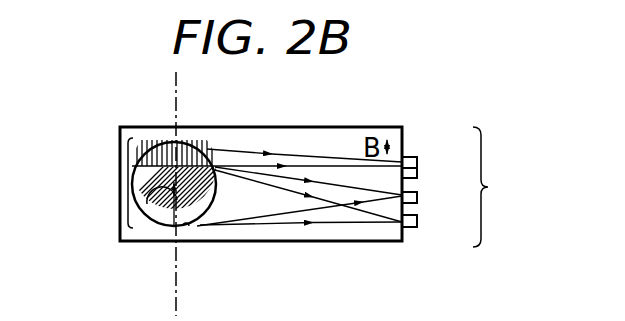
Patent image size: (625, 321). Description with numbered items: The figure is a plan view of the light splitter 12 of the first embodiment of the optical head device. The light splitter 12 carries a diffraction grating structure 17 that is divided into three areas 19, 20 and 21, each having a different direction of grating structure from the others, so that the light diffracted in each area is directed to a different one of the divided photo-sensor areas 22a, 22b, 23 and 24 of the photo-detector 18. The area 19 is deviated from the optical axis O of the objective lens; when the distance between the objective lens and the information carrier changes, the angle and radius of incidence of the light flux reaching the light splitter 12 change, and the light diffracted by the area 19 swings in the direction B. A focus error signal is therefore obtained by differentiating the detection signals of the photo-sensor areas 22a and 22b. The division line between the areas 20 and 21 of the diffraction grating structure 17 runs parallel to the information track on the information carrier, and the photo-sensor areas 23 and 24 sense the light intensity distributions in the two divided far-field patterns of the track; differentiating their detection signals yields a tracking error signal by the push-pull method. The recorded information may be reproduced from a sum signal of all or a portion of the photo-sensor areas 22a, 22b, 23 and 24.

The light splitter 12 is at (324, 127).
The diffraction grating structure 17 is at (129, 183).
The photo-detector 18 is at (494, 187).
The area 19 is at (163, 141).
The area 20 is at (167, 226).
The area 21 is at (183, 227).
The photo-sensor area 22a is at (417, 161).
The photo-sensor area 22b is at (417, 172).
The photo-sensor area 23 is at (417, 221).
The photo-sensor area 24 is at (417, 197).
The optical axis O is at (151, 228).